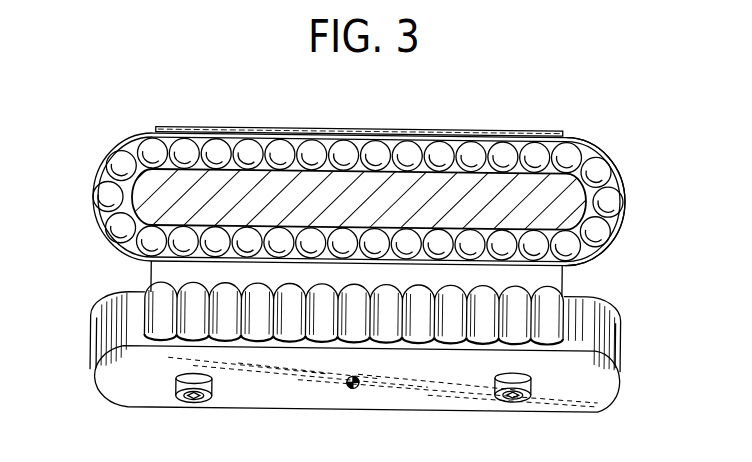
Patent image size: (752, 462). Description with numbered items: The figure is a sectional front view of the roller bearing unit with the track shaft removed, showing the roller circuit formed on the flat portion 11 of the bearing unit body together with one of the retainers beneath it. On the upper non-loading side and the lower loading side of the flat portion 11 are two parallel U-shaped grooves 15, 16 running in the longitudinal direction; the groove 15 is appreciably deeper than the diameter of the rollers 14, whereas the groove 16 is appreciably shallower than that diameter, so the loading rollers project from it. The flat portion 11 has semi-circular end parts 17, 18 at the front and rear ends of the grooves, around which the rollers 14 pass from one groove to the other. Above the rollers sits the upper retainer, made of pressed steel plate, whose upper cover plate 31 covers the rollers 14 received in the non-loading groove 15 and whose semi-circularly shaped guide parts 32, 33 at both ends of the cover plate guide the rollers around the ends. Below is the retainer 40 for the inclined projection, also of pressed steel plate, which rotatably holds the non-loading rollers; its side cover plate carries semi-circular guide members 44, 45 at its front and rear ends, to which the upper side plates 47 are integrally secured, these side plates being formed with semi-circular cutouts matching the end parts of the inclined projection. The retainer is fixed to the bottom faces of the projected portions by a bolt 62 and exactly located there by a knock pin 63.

The flat portion 11 is at (474, 181).
The rollers 14 is at (361, 181).
The U-shaped groove 15 is at (320, 163).
The U-shaped groove 16 is at (497, 226).
The semi-circular end part 17 is at (133, 217).
The semi-circular end part 18 is at (583, 203).
The upper cover plate 31 is at (362, 130).
The semi-circularly shaped guide part 32 is at (93, 206).
The semi-circularly shaped guide part 33 is at (626, 188).
The retainer 40 is at (353, 371).
The semi-circular guide member 44 is at (95, 345).
The semi-circular guide member 45 is at (610, 337).
The upper side plate 47 is at (110, 384).
The bolt 62 is at (192, 398).
The knock pin 63 is at (356, 388).